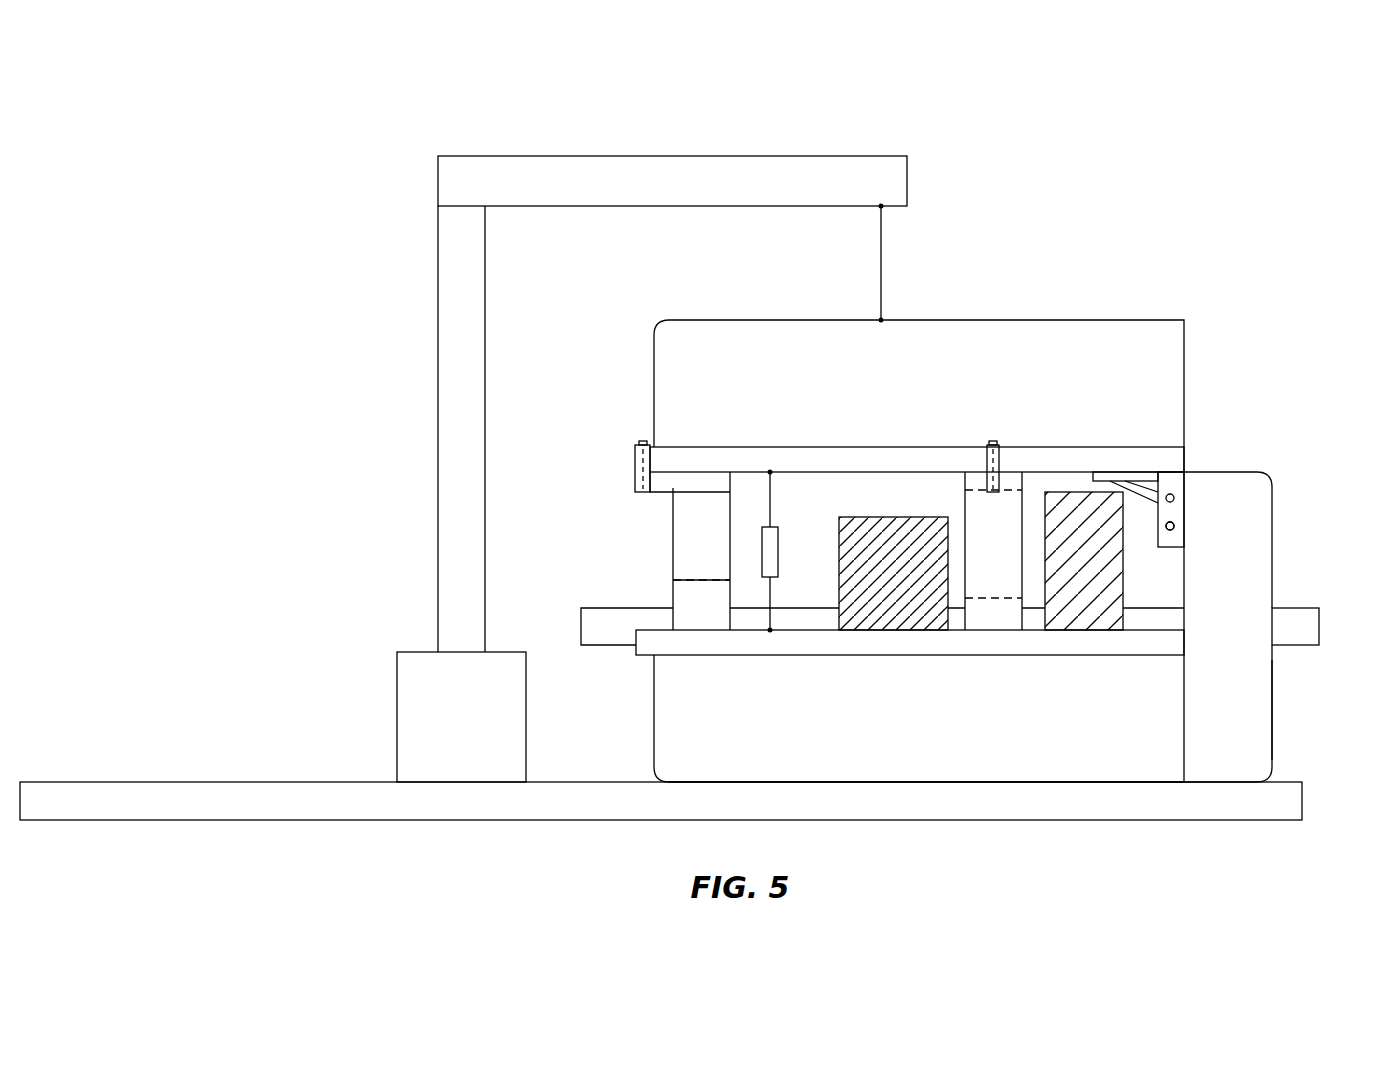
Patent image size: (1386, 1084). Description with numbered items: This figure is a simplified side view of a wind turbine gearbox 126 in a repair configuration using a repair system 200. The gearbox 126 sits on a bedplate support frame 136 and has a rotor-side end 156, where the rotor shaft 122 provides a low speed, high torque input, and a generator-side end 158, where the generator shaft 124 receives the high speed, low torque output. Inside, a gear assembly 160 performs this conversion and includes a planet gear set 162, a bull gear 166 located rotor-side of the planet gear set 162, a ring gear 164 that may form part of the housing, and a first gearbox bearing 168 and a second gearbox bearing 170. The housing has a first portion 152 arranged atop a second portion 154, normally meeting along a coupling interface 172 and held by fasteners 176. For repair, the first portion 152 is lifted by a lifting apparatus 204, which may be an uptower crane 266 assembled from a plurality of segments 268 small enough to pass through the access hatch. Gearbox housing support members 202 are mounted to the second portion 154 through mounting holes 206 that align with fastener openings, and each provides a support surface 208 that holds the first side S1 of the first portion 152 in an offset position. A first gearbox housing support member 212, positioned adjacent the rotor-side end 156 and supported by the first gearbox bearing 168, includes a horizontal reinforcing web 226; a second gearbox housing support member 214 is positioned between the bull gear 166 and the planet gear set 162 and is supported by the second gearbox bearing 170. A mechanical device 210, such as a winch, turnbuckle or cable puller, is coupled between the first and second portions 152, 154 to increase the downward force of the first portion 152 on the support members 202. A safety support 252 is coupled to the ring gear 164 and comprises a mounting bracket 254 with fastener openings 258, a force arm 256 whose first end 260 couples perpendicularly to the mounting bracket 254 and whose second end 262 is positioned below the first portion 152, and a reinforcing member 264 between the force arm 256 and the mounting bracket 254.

The repair system 200 is at (170, 168).
The plurality of segments 268 is at (565, 165).
The lifting apparatus 204 is at (815, 153).
The uptower crane 266 is at (672, 211).
The bedplate support frame 136 is at (230, 805).
The gearbox 126 is at (947, 499).
The first portion 152 is at (1165, 330).
The second portion 154 is at (1060, 770).
The generator-side end 158 is at (1305, 470).
The ring gear 164 is at (1250, 730).
The generator shaft 124 is at (1298, 610).
The rotor-side end 156 is at (605, 360).
The first side S1 is at (565, 440).
The rotor shaft 122 is at (582, 630).
The first gearbox bearing 168 is at (713, 616).
The gearbox housing support member 202 is at (863, 560).
The second gearbox housing support member 214 is at (975, 505).
The first gearbox housing support member 212 is at (636, 604).
The horizontal reinforcing web 226 is at (697, 620).
The support surface 208 is at (680, 470).
The fastener 176 is at (641, 445).
The mounting hole 206 is at (636, 487).
The coupling interface 172 is at (628, 478).
The mechanical device 210 is at (778, 545).
The bull gear 166 is at (892, 607).
The second gearbox bearing 170 is at (997, 614).
The planet gear set 162 is at (1093, 602).
The gear assembly 160 is at (820, 500).
The safety support 252 is at (1175, 480).
The fastener openings 258 is at (1176, 498).
The mounting bracket 254 is at (1175, 514).
The force arm 256 is at (1128, 472).
The second end 262 is at (1108, 478).
The reinforcing member 264 is at (1140, 478).
The first end 260 is at (1172, 470).